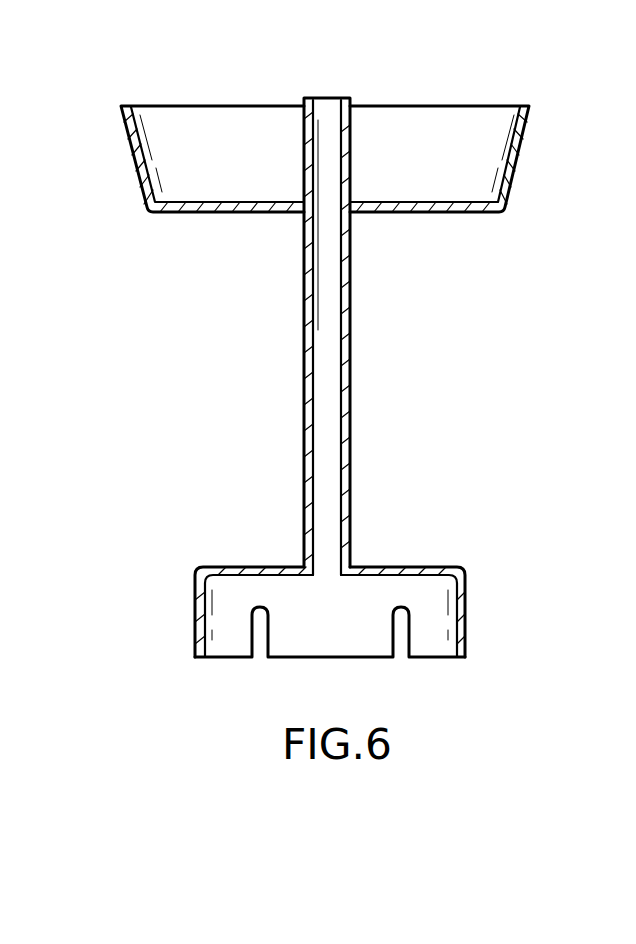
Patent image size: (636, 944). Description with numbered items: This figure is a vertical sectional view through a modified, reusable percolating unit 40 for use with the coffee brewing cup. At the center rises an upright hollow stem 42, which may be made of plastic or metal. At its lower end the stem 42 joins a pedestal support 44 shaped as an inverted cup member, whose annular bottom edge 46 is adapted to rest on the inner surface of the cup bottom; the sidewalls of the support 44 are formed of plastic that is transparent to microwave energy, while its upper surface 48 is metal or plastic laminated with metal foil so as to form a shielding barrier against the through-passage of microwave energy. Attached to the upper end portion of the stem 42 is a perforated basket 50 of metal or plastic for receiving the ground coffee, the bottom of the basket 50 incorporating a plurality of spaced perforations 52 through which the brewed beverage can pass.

The percolating unit 40 is at (290, 371).
The upright hollow stem 42 is at (351, 380).
The pedestal support 44 is at (195, 630).
The annular bottom edge 46 is at (375, 658).
The upper surface 48 is at (393, 567).
The perforated basket 50 is at (517, 152).
The perforations 52 is at (174, 213).